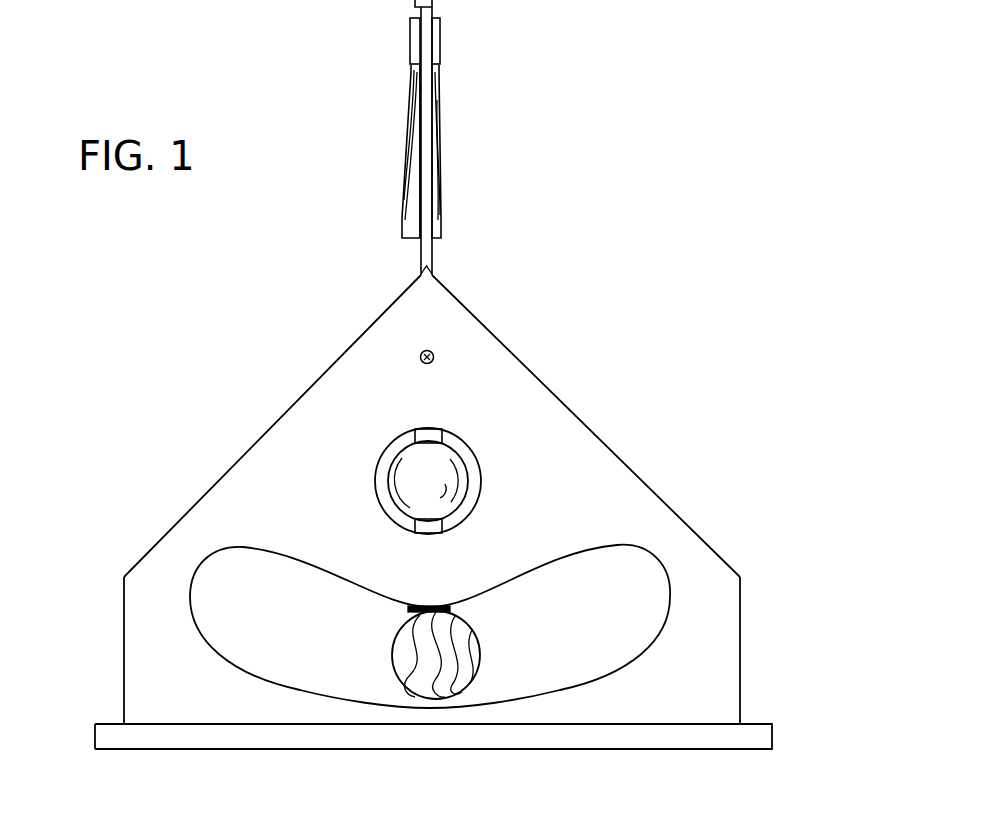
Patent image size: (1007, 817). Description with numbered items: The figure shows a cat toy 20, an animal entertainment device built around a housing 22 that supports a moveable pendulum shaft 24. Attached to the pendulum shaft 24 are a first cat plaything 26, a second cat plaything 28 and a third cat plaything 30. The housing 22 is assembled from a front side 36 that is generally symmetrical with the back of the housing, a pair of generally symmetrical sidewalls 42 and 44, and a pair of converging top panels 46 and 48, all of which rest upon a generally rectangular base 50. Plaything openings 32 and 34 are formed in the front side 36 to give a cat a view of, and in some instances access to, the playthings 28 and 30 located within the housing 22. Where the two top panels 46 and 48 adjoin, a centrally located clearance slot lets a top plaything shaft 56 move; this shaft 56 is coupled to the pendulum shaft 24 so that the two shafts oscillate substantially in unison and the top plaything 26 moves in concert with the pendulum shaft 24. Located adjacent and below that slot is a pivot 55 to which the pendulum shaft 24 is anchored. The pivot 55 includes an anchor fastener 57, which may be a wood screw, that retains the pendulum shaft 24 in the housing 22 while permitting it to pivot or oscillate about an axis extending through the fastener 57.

The cat toy 20 is at (680, 70).
The housing 22 is at (628, 749).
The pendulum shaft 24 is at (422, 527).
The first cat plaything 26 is at (411, 135).
The second cat plaything 28 is at (467, 460).
The third cat plaything 30 is at (412, 690).
The plaything opening 32 is at (480, 497).
The plaything opening 34 is at (245, 662).
The front side 36 is at (694, 712).
The sidewall 42 is at (124, 651).
The sidewall 44 is at (741, 650).
The top panel 46 is at (275, 422).
The top panel 48 is at (496, 332).
The base 50 is at (104, 737).
The pivot 55 is at (420, 352).
The top plaything shaft 56 is at (428, 45).
The anchor fastener 57 is at (418, 364).